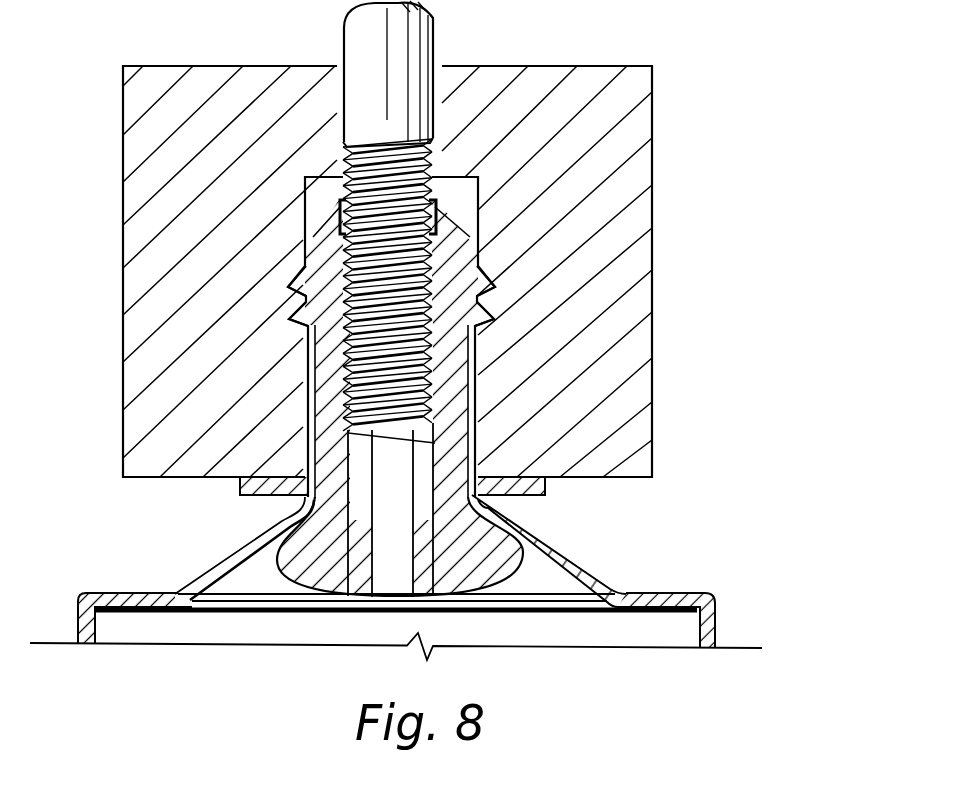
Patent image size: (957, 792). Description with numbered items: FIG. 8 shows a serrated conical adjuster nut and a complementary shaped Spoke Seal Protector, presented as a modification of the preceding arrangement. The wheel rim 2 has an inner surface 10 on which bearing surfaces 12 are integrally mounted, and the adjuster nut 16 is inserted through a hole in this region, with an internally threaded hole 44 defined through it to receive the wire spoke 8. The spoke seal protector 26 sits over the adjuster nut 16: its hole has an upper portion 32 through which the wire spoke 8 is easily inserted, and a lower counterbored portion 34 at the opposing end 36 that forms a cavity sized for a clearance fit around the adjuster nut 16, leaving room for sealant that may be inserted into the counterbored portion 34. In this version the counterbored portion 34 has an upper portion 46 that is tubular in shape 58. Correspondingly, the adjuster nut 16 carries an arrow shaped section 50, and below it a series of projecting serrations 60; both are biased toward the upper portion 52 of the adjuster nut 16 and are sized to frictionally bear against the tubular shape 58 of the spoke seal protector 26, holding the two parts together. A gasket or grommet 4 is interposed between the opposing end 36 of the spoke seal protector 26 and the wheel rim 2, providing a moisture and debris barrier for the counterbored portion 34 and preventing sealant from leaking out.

The wheel rim 2 is at (717, 617).
The gasket 4 is at (547, 496).
The wire spoke 8 is at (438, 40).
The inner surface 10 is at (567, 563).
The bearing surfaces 12 is at (282, 506).
The adjuster nut 16 is at (325, 610).
The spoke seal protector 26 is at (653, 423).
The upper portion 32 is at (432, 88).
The lower counterbored portion 34 is at (463, 395).
The opposing end 36 is at (242, 488).
The internally threaded hole 44 is at (433, 377).
The upper portion 46 is at (480, 205).
The arrow shaped section 50 is at (317, 235).
The upper portion 52 is at (315, 217).
The tubular shape 58 is at (455, 241).
The projecting serrations 60 is at (303, 307).